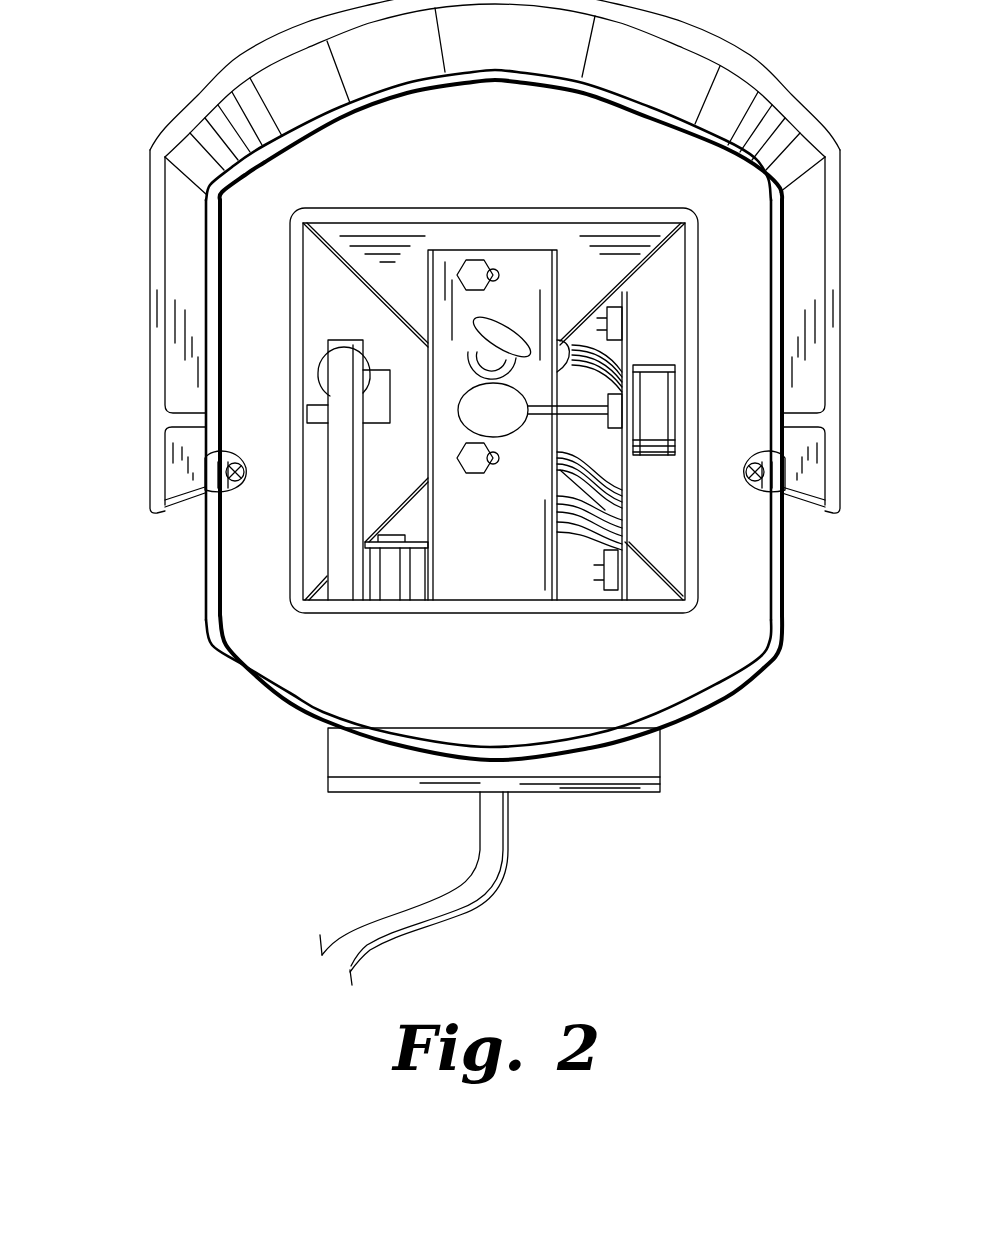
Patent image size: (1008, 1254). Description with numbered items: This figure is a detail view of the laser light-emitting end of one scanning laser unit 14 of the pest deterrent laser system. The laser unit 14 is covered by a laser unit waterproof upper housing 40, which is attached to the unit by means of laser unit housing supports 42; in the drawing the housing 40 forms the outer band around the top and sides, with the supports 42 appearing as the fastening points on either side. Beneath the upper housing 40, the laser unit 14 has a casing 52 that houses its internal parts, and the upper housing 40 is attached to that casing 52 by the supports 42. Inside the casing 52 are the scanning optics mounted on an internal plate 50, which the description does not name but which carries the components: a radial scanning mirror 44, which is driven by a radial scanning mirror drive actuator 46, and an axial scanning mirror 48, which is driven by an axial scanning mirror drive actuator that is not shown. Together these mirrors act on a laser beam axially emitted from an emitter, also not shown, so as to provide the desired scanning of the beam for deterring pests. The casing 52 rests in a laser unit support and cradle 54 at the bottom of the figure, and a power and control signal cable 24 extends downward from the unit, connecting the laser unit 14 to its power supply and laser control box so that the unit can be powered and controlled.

The laser unit 14 is at (145, 663).
The power and control signal cable 24 is at (507, 870).
The laser unit waterproof upper housing 40 is at (840, 155).
The laser unit housing support 42 is at (218, 494).
The radial scanning mirror 44 is at (480, 440).
The radial scanning mirror drive actuator 46 is at (668, 426).
The axial scanning mirror 48 is at (475, 320).
The mounting plate 50 is at (455, 580).
The casing 52 is at (779, 590).
The laser unit support and cradle 54 is at (360, 787).